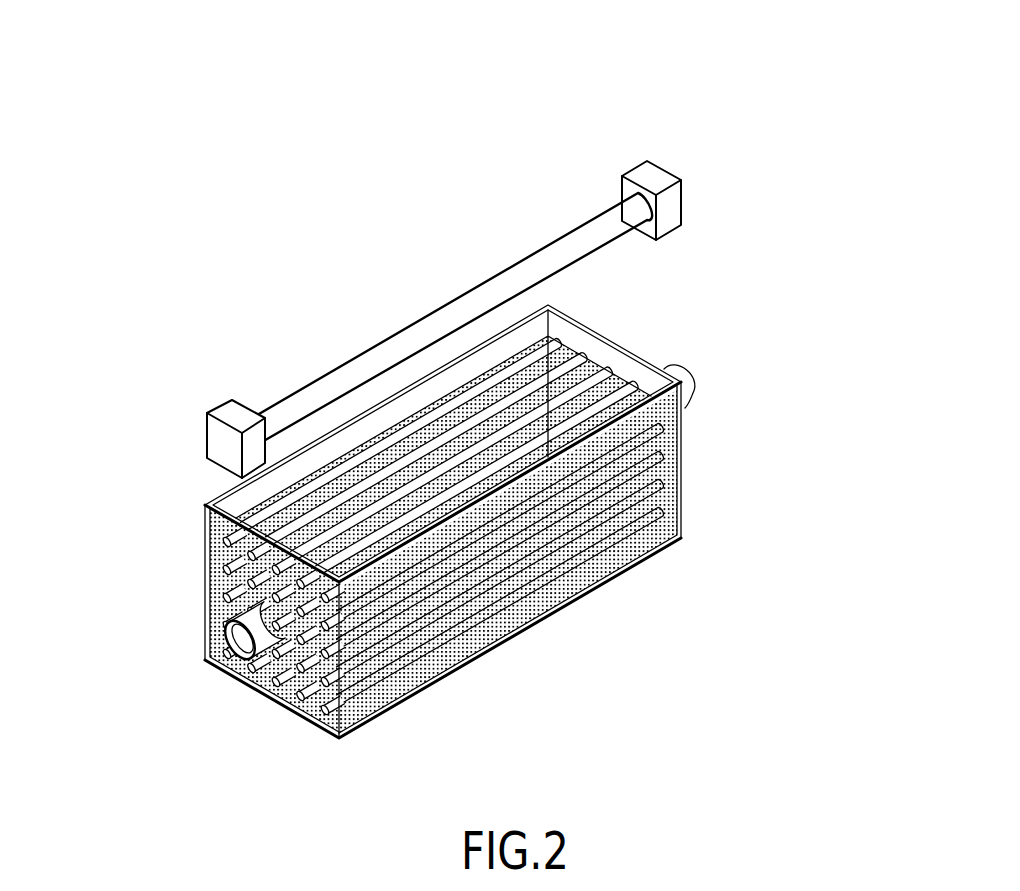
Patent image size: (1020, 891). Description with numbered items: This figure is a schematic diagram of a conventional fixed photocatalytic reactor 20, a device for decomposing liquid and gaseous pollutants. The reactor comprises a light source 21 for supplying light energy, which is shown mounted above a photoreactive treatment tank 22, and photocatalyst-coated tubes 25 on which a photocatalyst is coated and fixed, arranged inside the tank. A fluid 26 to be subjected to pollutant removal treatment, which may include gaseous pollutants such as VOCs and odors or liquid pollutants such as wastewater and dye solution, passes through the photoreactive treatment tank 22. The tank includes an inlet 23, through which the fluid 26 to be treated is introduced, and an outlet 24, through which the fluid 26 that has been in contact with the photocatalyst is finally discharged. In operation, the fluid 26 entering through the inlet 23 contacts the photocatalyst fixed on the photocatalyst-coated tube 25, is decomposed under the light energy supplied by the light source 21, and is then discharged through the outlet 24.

The fixed photocatalytic reactor 20 is at (477, 467).
The light source 21 is at (490, 285).
The photoreactive treatment tank 22 is at (684, 487).
The inlet 23 is at (218, 595).
The outlet 24 is at (692, 390).
The photocatalyst-coated tube 25 is at (473, 580).
The fluid 26 is at (557, 593).